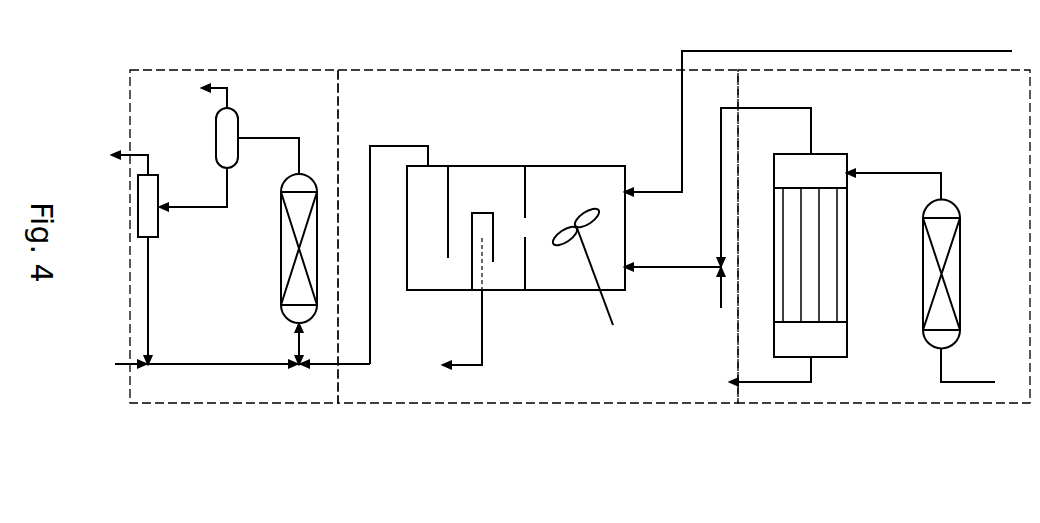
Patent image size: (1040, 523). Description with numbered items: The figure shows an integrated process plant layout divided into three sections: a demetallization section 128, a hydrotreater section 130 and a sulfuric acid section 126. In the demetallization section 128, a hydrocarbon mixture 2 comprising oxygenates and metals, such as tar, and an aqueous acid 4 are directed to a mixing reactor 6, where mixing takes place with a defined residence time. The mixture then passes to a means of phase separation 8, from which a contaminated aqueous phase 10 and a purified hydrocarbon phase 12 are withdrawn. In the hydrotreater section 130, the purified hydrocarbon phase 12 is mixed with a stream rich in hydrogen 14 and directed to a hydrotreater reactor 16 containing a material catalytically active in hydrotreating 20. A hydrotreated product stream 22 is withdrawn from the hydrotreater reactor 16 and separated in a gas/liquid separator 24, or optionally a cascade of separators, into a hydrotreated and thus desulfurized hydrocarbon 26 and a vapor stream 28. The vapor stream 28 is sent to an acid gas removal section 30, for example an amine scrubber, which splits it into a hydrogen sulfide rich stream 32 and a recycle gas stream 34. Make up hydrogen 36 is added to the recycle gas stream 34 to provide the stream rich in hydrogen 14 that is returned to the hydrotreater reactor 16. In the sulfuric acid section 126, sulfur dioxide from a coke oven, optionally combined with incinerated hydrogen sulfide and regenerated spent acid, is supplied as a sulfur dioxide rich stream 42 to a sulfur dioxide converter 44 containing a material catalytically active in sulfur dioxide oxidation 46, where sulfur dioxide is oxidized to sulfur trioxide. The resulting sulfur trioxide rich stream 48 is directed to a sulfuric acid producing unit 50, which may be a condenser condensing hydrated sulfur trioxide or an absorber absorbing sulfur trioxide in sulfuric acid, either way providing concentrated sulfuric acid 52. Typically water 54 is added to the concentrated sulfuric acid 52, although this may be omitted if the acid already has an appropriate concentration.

The hydrocarbon mixture 2 is at (922, 50).
The aqueous acid solution 4 is at (680, 265).
The mixing reactor 6 is at (557, 292).
The means of phase separation 8 is at (502, 292).
The contaminated aqueous phase 10 is at (465, 367).
The purified hydrocarbon phase 12 is at (370, 330).
The stream rich in hydrogen 14 is at (238, 362).
The hydrotreater reactor 16 is at (280, 310).
The material catalytically active in hydrotreating 20 is at (277, 258).
The hydrotreated product stream 22 is at (247, 140).
The gas/liquid separator 24 is at (216, 160).
The hydrotreated hydrocarbon 26 is at (212, 90).
The vapor stream 28 is at (173, 208).
The acid gas removal section 30 is at (152, 240).
The hydrogen sulfide rich stream 32 is at (123, 160).
The recycle gas stream 34 is at (148, 340).
The make up hydrogen 36 is at (125, 367).
The sulfur dioxide rich stream 42 is at (978, 387).
The sulfur dioxide converter 44 is at (960, 337).
The material catalytically active in sulfur dioxide oxidation 46 is at (925, 318).
The sulfur trioxide rich stream 48 is at (900, 175).
The sulfuric acid producing unit 50 is at (848, 275).
The concentrated sulfuric acid 52 is at (813, 138).
The water 54 is at (718, 293).
The sulfuric acid section 126 is at (884, 247).
The demetallization section 128 is at (538, 246).
The hydrotreater section 130 is at (234, 246).